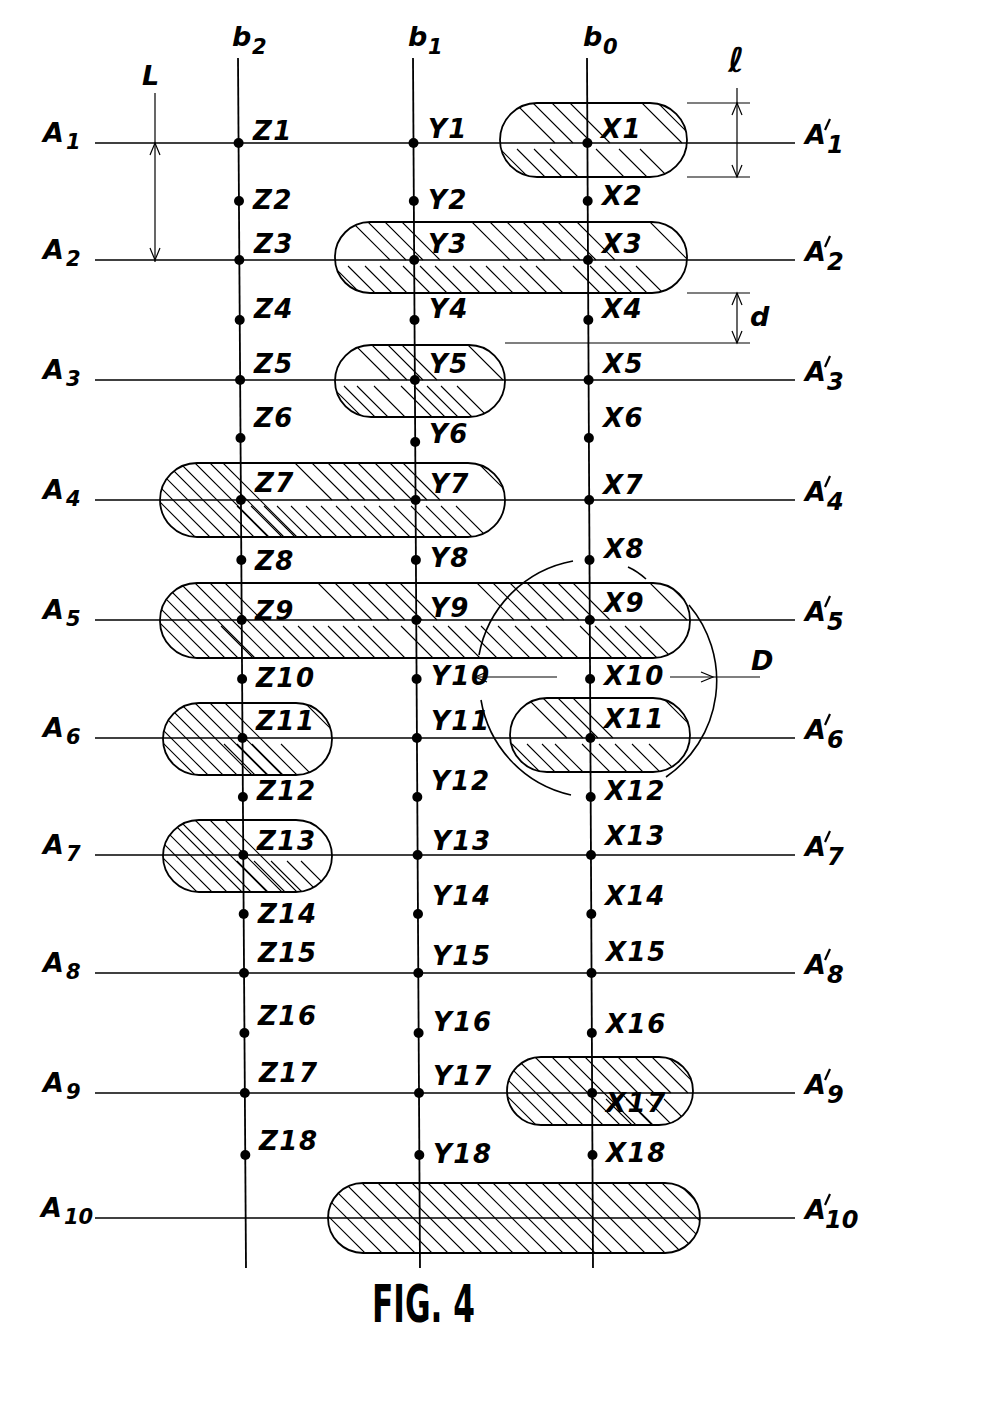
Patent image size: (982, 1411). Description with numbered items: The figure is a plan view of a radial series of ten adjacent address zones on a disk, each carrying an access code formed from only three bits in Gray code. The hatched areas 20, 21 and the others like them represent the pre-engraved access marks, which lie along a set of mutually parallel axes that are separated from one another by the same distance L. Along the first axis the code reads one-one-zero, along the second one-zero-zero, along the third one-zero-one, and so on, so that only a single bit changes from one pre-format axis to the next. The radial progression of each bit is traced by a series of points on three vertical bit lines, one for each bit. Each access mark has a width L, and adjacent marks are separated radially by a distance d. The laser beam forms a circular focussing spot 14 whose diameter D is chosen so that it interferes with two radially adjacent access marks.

The hatched area 20 is at (642, 112).
The hatched area 21 is at (664, 243).
The circular focussing spot 14 is at (698, 705).